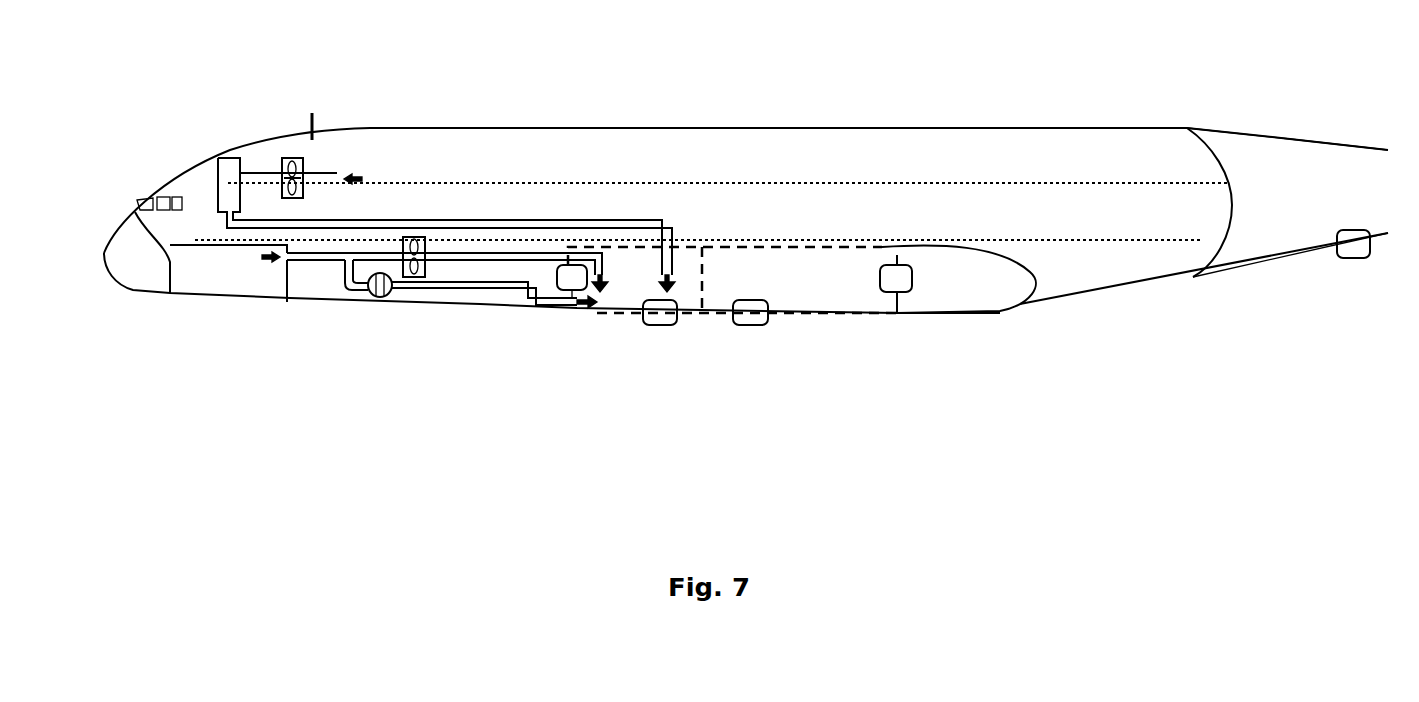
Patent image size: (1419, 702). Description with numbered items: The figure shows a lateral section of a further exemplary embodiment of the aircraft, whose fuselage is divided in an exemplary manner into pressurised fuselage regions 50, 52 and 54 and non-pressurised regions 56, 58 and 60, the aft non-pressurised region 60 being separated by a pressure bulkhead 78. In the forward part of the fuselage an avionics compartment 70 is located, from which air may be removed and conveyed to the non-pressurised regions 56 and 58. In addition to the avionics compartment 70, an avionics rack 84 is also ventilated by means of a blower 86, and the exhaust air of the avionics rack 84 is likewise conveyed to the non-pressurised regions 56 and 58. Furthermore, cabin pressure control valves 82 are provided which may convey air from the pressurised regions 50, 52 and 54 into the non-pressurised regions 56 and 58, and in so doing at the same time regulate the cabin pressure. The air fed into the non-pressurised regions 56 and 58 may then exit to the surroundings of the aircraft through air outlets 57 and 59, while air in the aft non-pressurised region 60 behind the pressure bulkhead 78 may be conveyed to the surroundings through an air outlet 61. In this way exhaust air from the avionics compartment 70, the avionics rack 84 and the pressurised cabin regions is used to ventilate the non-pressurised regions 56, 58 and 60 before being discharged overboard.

The pressurised fuselage region 50 is at (555, 152).
The pressurised fuselage region 52 is at (847, 220).
The pressurised fuselage region 54 is at (140, 219).
The non-pressurised region 56 is at (613, 297).
The air outlet 57 is at (657, 323).
The non-pressurised region 58 is at (793, 300).
The air outlet 59 is at (750, 323).
The non-pressurised region 60 is at (1308, 160).
The air outlet 61 is at (1357, 253).
The avionics compartment 70 is at (253, 280).
The pressure bulkhead 78 is at (1220, 240).
The cabin pressure control valve 82 is at (572, 282).
The avionics rack 84 is at (233, 170).
The blower 86 is at (296, 165).